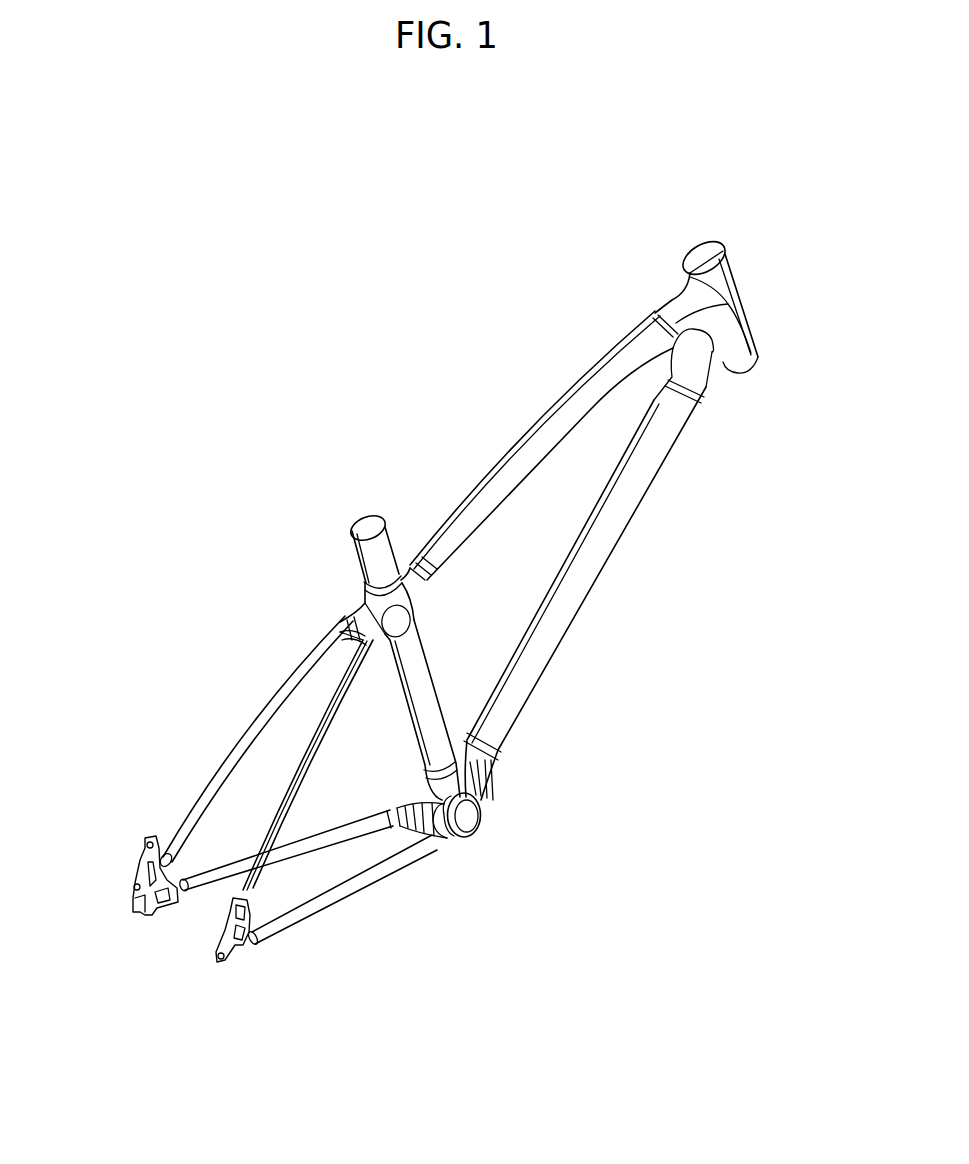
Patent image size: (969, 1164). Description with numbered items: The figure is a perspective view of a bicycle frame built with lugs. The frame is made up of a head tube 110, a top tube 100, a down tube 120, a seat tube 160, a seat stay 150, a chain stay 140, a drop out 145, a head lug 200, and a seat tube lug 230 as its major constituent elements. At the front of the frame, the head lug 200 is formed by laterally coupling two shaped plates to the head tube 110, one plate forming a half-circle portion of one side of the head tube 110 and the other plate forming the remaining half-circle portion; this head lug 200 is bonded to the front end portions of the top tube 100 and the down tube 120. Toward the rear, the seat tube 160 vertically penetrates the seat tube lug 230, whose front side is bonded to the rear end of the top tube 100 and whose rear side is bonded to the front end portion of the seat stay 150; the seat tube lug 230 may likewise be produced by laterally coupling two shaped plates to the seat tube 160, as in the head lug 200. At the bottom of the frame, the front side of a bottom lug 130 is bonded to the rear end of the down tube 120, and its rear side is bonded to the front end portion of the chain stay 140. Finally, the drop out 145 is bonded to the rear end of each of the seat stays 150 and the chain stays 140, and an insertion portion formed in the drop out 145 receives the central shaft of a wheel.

The top tube 100 is at (510, 461).
The head tube 110 is at (746, 312).
The down tube 120 is at (592, 578).
The bottom lug 130 is at (498, 806).
The chain stay 140 is at (350, 835).
The drop out 145 is at (194, 951).
The seat stay 150 is at (262, 716).
The seat tube 160 is at (428, 687).
The head lug 200 is at (654, 272).
The seat tube lug 230 is at (350, 603).